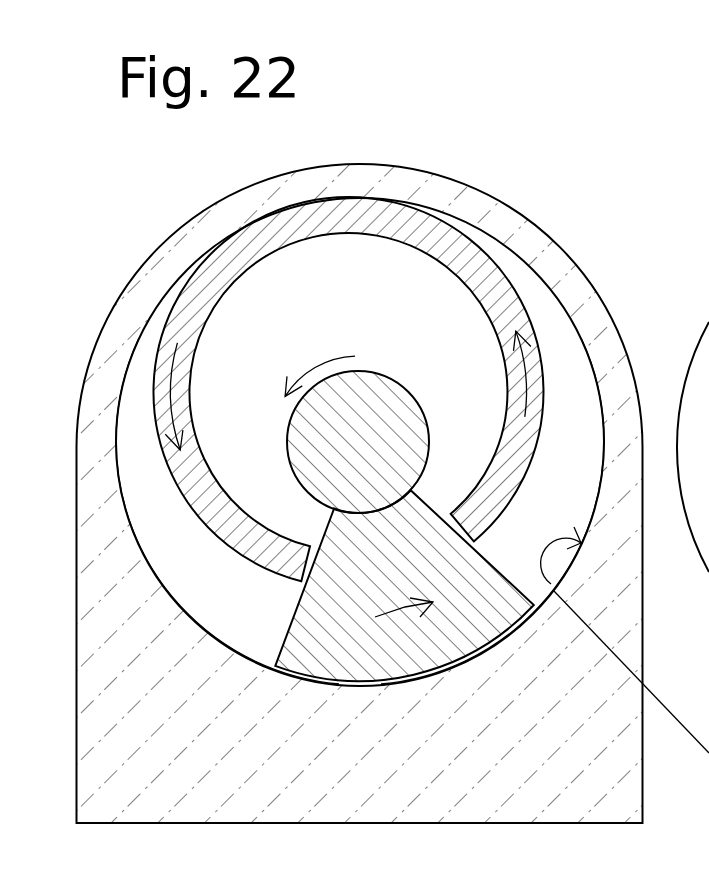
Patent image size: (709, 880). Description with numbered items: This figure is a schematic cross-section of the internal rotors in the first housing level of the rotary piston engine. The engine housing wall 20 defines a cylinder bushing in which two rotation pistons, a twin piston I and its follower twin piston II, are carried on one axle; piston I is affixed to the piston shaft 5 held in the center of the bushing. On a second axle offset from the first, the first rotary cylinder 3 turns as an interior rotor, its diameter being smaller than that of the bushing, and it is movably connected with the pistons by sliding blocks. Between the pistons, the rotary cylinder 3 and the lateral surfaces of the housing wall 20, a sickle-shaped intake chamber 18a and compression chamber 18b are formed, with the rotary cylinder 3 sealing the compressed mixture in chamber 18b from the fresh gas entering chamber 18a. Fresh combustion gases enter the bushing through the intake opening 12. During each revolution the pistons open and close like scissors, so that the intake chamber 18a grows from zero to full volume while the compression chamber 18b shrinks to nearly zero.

The intake opening 12 is at (145, 297).
The first rotary cylinder 3 is at (448, 253).
The piston shaft 5 is at (363, 432).
The intake chamber 18a is at (217, 583).
The compression chamber 18b is at (560, 462).
The housing wall 20 is at (545, 738).